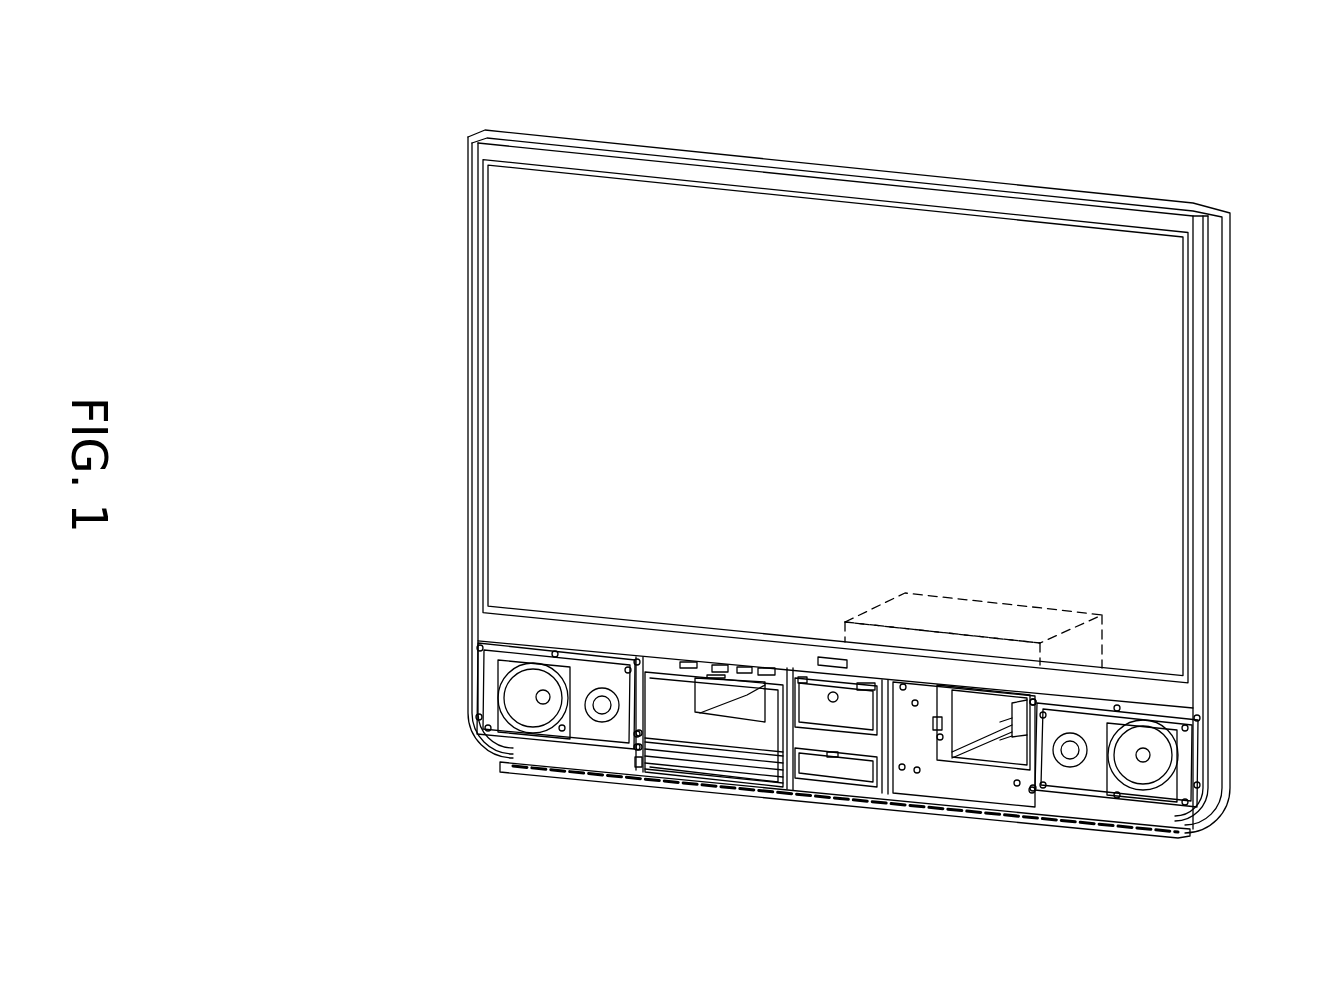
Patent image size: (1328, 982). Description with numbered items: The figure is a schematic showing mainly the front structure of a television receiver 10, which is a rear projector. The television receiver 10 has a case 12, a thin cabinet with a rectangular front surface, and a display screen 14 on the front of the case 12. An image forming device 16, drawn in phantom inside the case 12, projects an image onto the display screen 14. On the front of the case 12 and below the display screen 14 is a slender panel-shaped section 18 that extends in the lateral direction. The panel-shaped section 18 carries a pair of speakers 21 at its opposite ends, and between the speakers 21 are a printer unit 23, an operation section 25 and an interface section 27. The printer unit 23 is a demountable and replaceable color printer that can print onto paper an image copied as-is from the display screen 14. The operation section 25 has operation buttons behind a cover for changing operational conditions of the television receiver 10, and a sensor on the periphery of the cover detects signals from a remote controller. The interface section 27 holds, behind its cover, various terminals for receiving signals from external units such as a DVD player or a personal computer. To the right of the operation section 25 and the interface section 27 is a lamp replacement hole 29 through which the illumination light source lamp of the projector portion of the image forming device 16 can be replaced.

The television receiver 10 is at (1198, 53).
The case 12 is at (876, 172).
The display screen 14 is at (1030, 253).
The image forming device 16 is at (1060, 610).
The panel-shaped section 18 is at (911, 788).
The speakers 21 is at (585, 735).
The printer unit 23 is at (712, 742).
The operation section 25 is at (818, 700).
The interface section 27 is at (833, 780).
The lamp replacement hole 29 is at (998, 757).